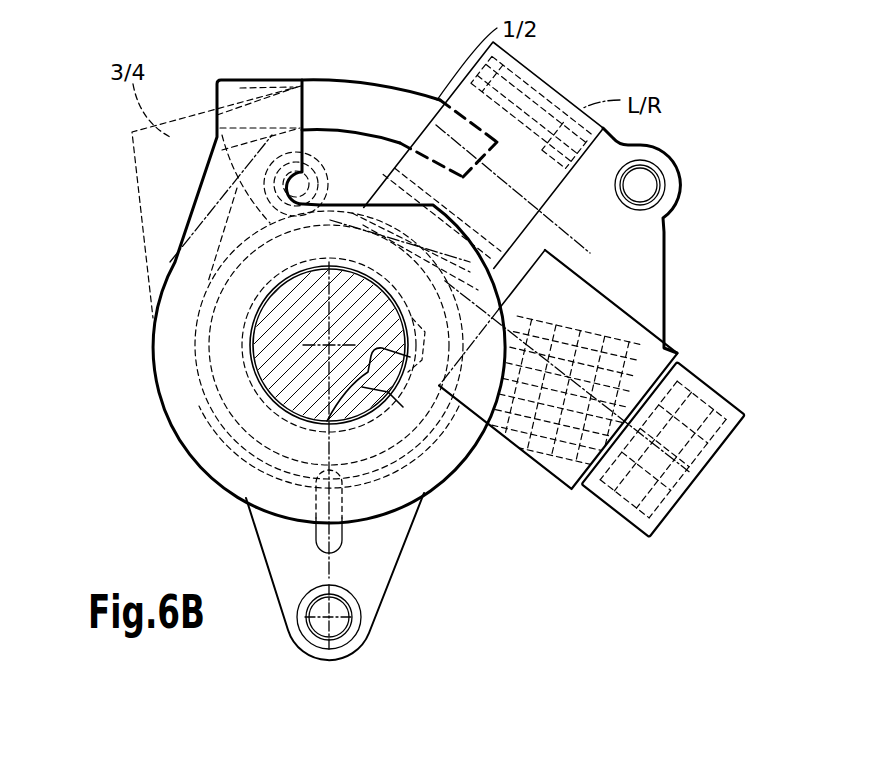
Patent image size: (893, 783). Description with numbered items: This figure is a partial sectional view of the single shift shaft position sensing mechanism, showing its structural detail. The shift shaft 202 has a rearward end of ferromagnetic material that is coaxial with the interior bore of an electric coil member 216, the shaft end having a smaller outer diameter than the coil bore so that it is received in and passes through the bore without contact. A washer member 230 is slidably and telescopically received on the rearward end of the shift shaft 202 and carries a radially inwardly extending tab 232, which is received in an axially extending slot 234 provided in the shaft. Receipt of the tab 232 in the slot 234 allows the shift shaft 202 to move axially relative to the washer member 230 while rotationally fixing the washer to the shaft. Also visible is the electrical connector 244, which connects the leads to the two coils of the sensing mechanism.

The shift shaft 202 is at (278, 326).
The electric coil member 216 is at (248, 420).
The washer member 230 is at (178, 197).
The radially inwardly extending tab 232 is at (327, 396).
The axially extending slot 234 is at (420, 108).
The electrical connector 244 is at (707, 377).